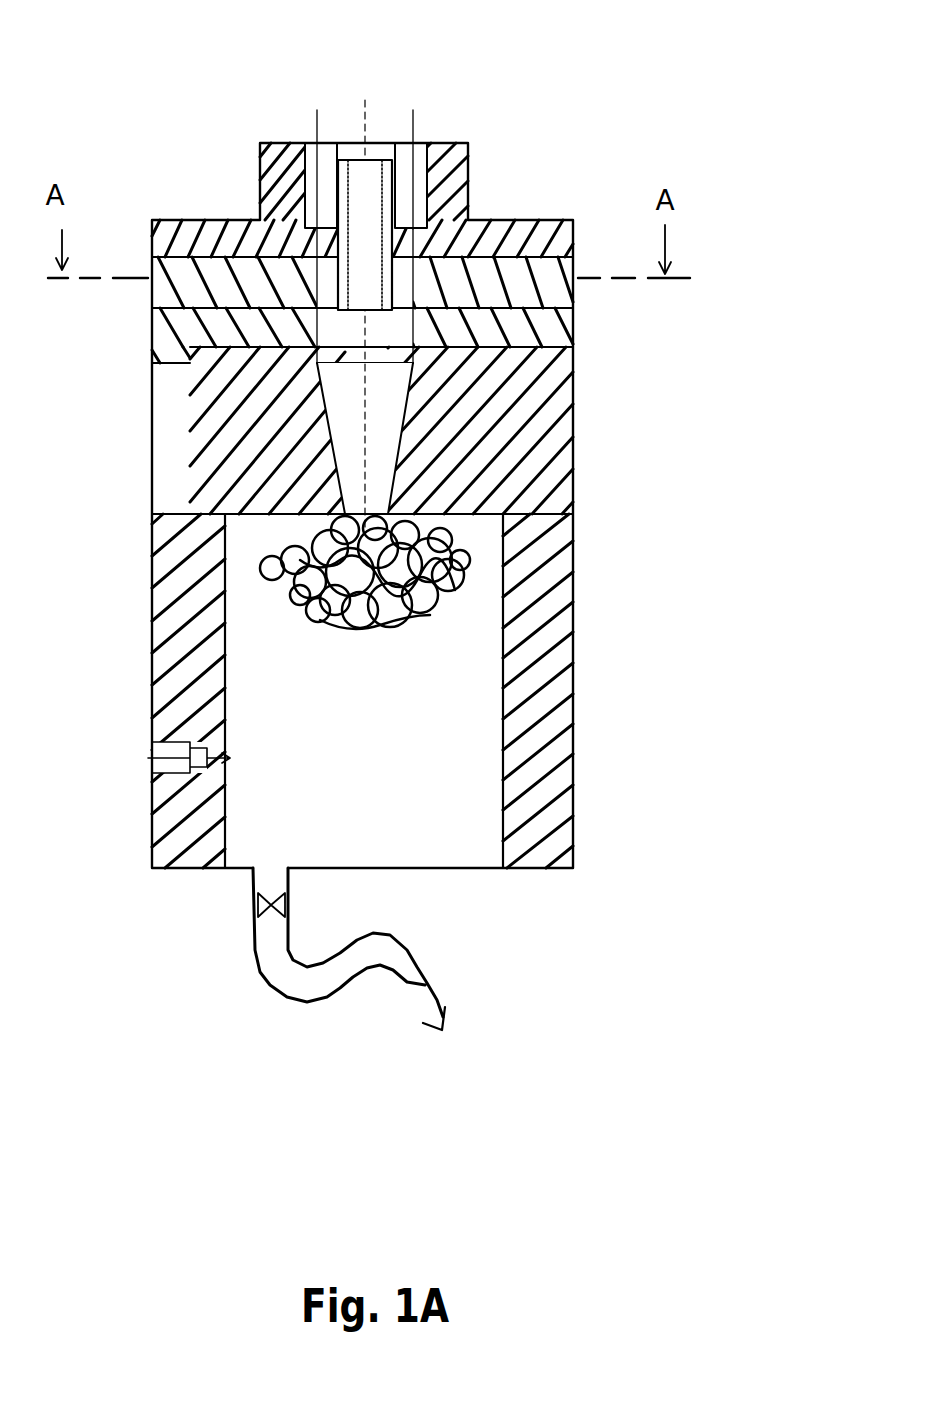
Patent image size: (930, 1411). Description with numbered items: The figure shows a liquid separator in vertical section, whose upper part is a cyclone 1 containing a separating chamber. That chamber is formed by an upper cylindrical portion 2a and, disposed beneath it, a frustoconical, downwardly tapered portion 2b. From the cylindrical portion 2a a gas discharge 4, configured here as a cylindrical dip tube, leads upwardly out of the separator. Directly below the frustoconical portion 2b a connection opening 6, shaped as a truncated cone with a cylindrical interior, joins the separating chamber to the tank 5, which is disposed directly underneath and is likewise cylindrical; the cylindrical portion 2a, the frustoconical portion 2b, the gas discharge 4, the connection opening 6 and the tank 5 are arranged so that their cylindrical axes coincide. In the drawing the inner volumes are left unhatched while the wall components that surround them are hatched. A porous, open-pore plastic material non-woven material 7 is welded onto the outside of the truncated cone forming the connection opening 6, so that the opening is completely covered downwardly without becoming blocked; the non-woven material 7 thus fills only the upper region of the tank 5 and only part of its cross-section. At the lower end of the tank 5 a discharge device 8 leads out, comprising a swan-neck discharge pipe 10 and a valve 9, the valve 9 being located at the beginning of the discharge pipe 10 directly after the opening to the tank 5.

The cyclone 1 is at (532, 92).
The upper cylindrical portion 2a is at (392, 322).
The frustoconical portion 2b is at (385, 417).
The gas discharge 4 is at (380, 185).
The tank 5 is at (422, 842).
The connection opening 6 is at (380, 533).
The plastic material non-woven material 7 is at (347, 633).
The discharge device 8 is at (260, 1028).
The valve 9 is at (257, 913).
The discharge pipe 10 is at (337, 995).